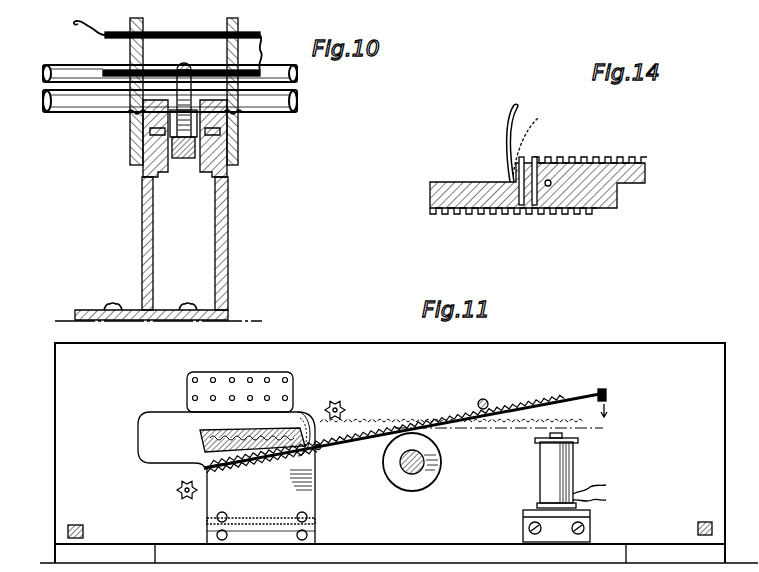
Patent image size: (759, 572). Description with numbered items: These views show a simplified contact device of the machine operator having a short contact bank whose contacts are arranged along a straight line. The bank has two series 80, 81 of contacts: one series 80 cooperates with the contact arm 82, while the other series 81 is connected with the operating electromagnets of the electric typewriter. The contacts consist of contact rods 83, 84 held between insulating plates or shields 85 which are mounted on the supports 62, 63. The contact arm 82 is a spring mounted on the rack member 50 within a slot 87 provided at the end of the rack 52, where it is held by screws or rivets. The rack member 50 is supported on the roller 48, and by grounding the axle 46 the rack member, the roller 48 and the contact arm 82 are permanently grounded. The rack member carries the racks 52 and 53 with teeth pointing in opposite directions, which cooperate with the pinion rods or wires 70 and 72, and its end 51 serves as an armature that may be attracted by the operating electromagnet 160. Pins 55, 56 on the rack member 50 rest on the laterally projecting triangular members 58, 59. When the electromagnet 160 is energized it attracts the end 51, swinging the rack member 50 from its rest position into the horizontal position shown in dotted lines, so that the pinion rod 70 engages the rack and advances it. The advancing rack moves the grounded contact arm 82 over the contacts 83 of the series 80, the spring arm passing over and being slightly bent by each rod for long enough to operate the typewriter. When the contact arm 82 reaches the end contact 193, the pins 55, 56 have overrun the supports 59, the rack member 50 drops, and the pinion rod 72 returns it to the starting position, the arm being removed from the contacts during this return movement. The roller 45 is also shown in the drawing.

In FIG. 11, the roller 45 is at (482, 399).
In FIG. 11, the axle 46 is at (400, 469).
In FIG. 11, the roller 48 is at (440, 463).
In FIG. 11, the rack member 50 is at (460, 421).
In FIG. 11, the end of the rack member 51 is at (589, 392).
In FIG. 11, the rack 52 is at (522, 400).
In FIG. 11, the rack 53 is at (265, 469).
In FIG. 10, the pin 55 is at (150, 132).
In FIG. 11, the pin 55 is at (321, 450).
In FIG. 10, the pin 56 is at (222, 131).
In FIG. 10, the laterally projecting triangular member 58 is at (168, 178).
In FIG. 10, the laterally projecting triangular member 59 is at (200, 178).
In FIG. 11, the laterally projecting triangular member 59 is at (203, 445).
In FIG. 10, the support 62 is at (154, 258).
In FIG. 11, the support 62 is at (309, 506).
In FIG. 10, the support 63 is at (228, 258).
In FIG. 11, the pinion rod 70 is at (341, 406).
In FIG. 11, the pinion rod 72 is at (182, 497).
In FIG. 11, the contact series 80 is at (302, 410).
In FIG. 11, the contact series 81 is at (294, 383).
In FIG. 10, the contact arm 82 is at (183, 61).
In FIG. 14, the contact arm 82 is at (505, 141).
In FIG. 10, the contact rod 83 is at (200, 70).
In FIG. 10, the contact rod 84 is at (168, 39).
In FIG. 10, the insulating plate 85 is at (130, 52).
In FIG. 14, the slot 87 is at (538, 158).
In FIG. 11, the operating electromagnet 160 is at (571, 481).
In FIG. 11, the end contact 193 is at (192, 398).